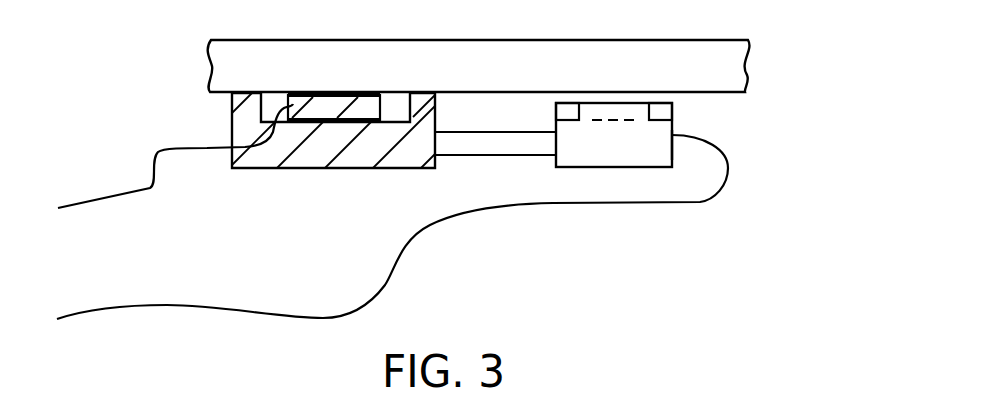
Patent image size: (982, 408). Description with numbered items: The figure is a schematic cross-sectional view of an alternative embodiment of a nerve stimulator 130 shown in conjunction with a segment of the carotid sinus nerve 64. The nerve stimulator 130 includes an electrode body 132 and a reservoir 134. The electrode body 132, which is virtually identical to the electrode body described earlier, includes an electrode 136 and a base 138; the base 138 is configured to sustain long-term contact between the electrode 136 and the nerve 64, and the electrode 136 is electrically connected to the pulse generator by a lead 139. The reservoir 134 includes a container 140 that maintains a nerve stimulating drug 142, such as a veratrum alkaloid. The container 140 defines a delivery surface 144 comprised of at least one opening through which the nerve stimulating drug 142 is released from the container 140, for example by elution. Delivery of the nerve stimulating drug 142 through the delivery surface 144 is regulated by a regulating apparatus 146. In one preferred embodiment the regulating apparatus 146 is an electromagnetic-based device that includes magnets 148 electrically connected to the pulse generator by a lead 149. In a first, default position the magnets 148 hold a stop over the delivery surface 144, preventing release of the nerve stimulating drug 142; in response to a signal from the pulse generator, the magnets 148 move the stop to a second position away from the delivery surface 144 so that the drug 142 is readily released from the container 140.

The carotid sinus nerve 64 is at (725, 52).
The nerve stimulator 130 is at (347, 206).
The electrode body 132 is at (266, 171).
The reservoir 134 is at (554, 170).
The electrode 136 is at (350, 102).
The base 138 is at (243, 123).
The lead 139 is at (107, 198).
The container 140 is at (621, 166).
The nerve stimulating drug 142 is at (657, 152).
The delivery surface 144 is at (622, 110).
The regulating apparatus 146 is at (676, 107).
The magnets 148 is at (660, 100).
The lead 149 is at (728, 192).